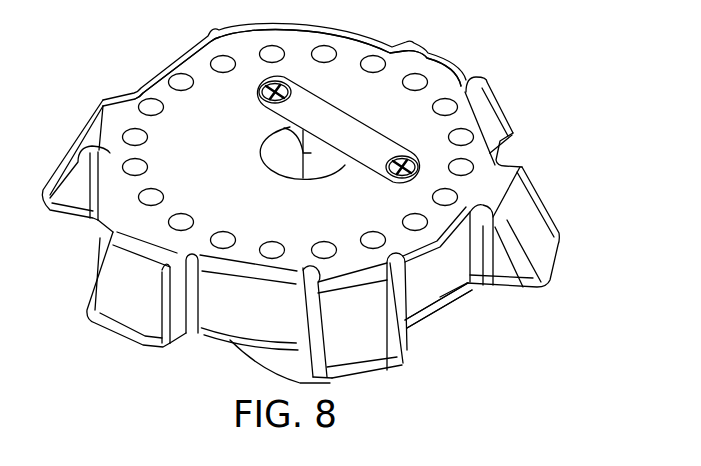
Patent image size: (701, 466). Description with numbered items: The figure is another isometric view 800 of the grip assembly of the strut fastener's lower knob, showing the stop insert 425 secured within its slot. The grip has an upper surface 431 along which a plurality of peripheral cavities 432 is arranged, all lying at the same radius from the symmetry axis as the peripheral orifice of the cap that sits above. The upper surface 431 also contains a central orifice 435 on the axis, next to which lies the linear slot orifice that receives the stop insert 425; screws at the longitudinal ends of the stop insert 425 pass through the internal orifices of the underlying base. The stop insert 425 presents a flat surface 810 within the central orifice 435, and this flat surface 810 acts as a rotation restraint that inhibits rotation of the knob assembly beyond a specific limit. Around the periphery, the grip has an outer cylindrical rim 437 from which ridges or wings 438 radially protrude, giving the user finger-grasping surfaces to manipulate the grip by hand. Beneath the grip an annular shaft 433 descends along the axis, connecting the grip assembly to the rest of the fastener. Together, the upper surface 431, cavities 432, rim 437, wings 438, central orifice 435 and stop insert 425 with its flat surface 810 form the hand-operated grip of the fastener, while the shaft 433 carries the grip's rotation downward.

The isometric view 800 is at (577, 53).
The stop insert 425 is at (347, 112).
The upper surface 431 is at (302, 225).
The peripheral cavities 432 is at (423, 82).
The annular shaft 433 is at (246, 353).
The central orifice 435 is at (259, 152).
The outer cylindrical rim 437 is at (448, 303).
The wings 438 is at (533, 186).
The flat surface 810 is at (284, 128).